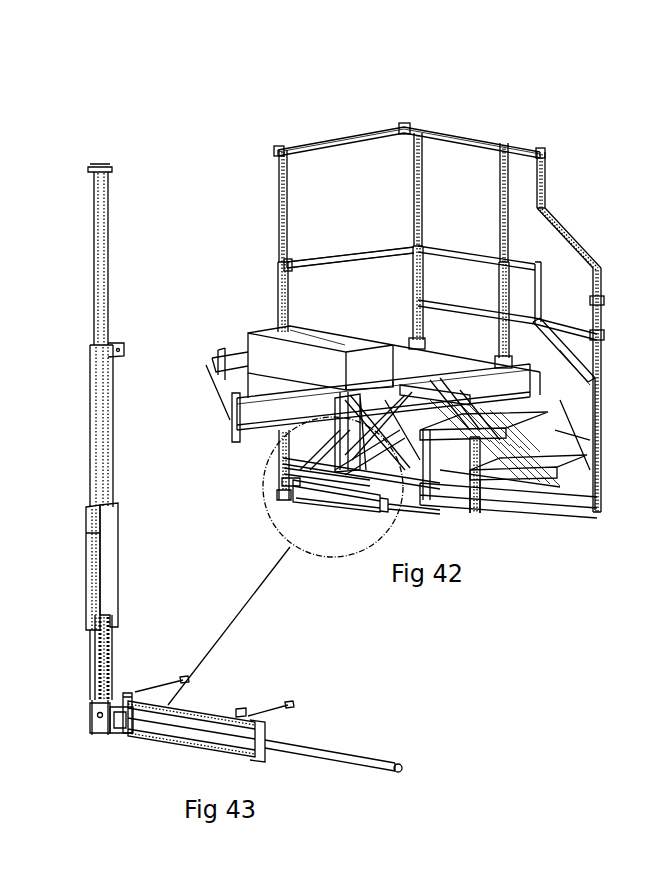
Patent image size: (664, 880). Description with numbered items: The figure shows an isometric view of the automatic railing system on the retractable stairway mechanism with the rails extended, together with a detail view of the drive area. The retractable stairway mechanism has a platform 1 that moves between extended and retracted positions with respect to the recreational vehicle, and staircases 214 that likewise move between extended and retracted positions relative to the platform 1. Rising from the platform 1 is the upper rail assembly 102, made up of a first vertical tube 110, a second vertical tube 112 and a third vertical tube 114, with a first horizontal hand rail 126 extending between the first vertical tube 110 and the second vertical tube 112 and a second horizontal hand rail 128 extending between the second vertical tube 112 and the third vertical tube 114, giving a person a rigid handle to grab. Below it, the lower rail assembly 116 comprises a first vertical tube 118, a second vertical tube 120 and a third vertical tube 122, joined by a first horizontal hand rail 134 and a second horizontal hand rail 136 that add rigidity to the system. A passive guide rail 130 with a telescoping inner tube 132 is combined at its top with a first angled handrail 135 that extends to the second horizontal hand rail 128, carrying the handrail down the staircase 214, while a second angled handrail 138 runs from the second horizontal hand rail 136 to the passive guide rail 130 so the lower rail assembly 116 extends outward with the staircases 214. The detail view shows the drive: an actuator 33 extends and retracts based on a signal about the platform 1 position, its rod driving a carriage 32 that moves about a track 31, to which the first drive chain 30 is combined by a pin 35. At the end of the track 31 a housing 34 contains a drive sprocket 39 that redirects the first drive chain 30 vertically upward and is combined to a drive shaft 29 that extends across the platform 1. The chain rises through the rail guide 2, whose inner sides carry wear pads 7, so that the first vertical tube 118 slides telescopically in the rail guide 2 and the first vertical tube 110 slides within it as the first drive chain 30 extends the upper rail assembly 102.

In FIG. 42, the platform 1 is at (241, 376).
In FIG. 43, the rail guide 2 is at (113, 558).
In FIG. 43, the wear pads 7 is at (86, 504).
In FIG. 43, the drive shaft 29 is at (97, 715).
In FIG. 43, the first drive chain 30 is at (96, 663).
In FIG. 43, the track 31 is at (192, 708).
In FIG. 43, the carriage 32 is at (121, 726).
In FIG. 43, the actuator 33 is at (356, 753).
In FIG. 43, the housing 34 is at (96, 726).
In FIG. 43, the pin 35 is at (126, 696).
In FIG. 43, the drive sprocket 39 is at (107, 730).
In FIG. 42, the upper rail assembly 102 is at (247, 146).
In FIG. 42, the first vertical tube 110 is at (280, 161).
In FIG. 43, the first vertical tube 110 is at (96, 211).
In FIG. 42, the second vertical tube 112 is at (422, 166).
In FIG. 42, the third vertical tube 114 is at (502, 195).
In FIG. 42, the lower rail assembly 116 is at (366, 262).
In FIG. 42, the first vertical tube 118 is at (279, 272).
In FIG. 43, the first vertical tube 118 is at (106, 412).
In FIG. 42, the second vertical tube 120 is at (413, 275).
In FIG. 42, the third vertical tube 122 is at (498, 287).
In FIG. 42, the first horizontal hand rail 126 is at (354, 137).
In FIG. 42, the second horizontal hand rail 128 is at (519, 148).
In FIG. 42, the passive guide rail 130 is at (603, 366).
In FIG. 42, the telescoping inner tube 132 is at (602, 311).
In FIG. 42, the first horizontal hand rail 134 is at (386, 246).
In FIG. 42, the first angled handrail 135 is at (566, 234).
In FIG. 42, the second horizontal hand rail 136 is at (461, 250).
In FIG. 42, the second angled handrail 138 is at (543, 320).
In FIG. 42, the staircases 214 is at (538, 516).